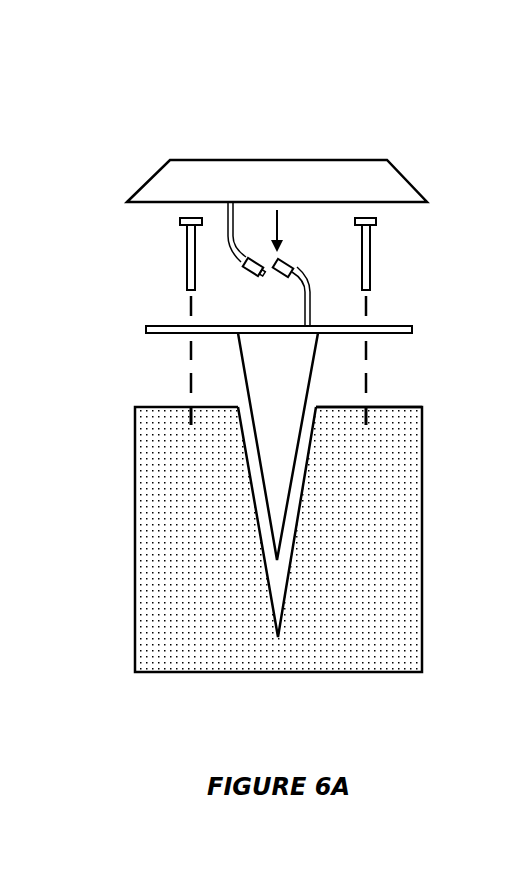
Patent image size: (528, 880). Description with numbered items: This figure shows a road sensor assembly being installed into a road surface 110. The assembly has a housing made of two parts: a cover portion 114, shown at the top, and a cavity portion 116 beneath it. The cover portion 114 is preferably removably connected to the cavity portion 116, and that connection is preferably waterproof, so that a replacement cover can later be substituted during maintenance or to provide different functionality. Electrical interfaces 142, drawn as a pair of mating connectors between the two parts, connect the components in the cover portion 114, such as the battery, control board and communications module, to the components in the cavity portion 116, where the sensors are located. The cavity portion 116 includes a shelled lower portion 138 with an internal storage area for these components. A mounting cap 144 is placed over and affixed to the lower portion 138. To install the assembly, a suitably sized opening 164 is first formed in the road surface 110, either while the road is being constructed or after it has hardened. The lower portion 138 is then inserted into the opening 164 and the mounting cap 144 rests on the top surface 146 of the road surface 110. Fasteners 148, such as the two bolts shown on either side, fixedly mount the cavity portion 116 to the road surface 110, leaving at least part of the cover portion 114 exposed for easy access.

The cover portion 114 is at (428, 196).
The cavity portion 116 is at (413, 326).
The mounting cap 144 is at (147, 334).
The fasteners 148 is at (186, 246).
The electrical interfaces 142 is at (234, 256).
The road surface 110 is at (156, 598).
The top surface 146 is at (408, 406).
The opening 164 is at (277, 570).
The lower portion 138 is at (241, 350).